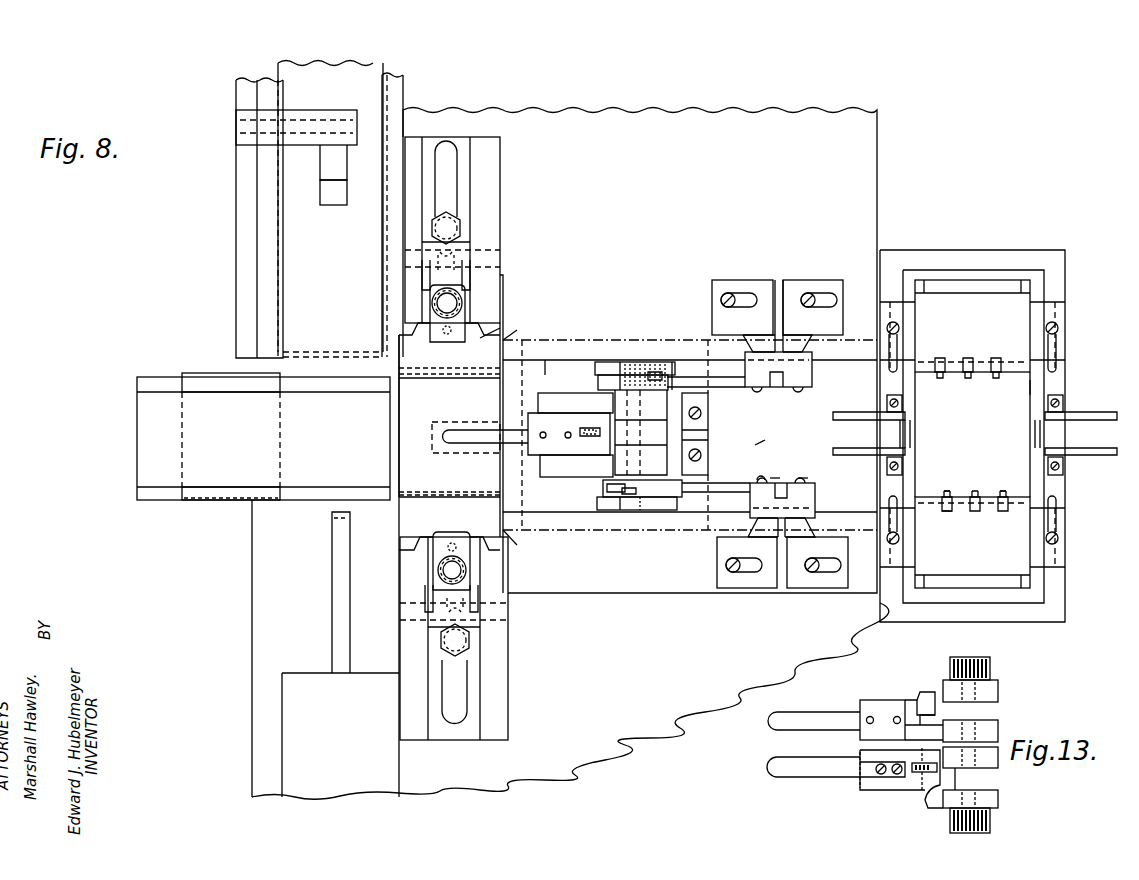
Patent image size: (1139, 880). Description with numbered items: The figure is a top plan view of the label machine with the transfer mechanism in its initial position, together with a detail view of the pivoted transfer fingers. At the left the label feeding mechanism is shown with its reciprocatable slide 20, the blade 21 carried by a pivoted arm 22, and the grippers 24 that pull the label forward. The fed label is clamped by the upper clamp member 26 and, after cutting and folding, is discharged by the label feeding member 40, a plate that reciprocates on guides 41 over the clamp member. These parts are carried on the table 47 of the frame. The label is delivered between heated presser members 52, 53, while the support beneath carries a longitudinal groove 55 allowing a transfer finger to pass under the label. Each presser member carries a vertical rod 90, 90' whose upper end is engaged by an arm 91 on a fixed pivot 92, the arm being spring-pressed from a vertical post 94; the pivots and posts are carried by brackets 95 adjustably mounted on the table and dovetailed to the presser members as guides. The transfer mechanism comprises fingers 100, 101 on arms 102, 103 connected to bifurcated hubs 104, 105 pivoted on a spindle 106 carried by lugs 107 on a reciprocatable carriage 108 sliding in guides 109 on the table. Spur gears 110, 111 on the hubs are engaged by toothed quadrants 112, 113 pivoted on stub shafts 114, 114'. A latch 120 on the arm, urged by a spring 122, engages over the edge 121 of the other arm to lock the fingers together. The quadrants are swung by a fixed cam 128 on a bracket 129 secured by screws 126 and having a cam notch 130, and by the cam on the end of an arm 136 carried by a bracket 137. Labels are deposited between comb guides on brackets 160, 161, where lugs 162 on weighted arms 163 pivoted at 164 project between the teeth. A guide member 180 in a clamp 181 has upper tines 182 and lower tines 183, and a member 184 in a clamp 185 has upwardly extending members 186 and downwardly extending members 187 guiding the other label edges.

In FIG. 8, the reciprocatable slide 20 is at (265, 255).
In FIG. 8, the blade 21 is at (322, 197).
In FIG. 8, the pivoted arm 22 is at (332, 158).
In FIG. 8, the grippers 24 is at (330, 572).
In FIG. 8, the upper clamp member 26 is at (263, 438).
In FIG. 8, the label feeding member 40 is at (210, 497).
In FIG. 8, the guides 41 is at (297, 495).
In FIG. 8, the table 47 is at (862, 163).
In FIG. 8, the presser member 52 is at (520, 329).
In FIG. 8, the presser member 53 is at (520, 544).
In FIG. 8, the longitudinal groove 55 is at (466, 422).
In FIG. 8, the vertical rod 90 is at (449, 543).
In FIG. 8, the vertical rod 90' is at (449, 331).
In FIG. 8, the arm 91 is at (493, 322).
In FIG. 8, the fixed pivot 92 is at (470, 255).
In FIG. 8, the vertical post 94 is at (450, 303).
In FIG. 8, the bracket 95 is at (486, 193).
In FIG. 8, the transfer finger 100 is at (487, 445).
In FIG. 13, the transfer finger 100 is at (805, 713).
In FIG. 13, the transfer finger 101 is at (810, 770).
In FIG. 13, the arm 102 is at (880, 700).
In FIG. 13, the arm 103 is at (878, 787).
In FIG. 8, the hub 104 is at (668, 397).
In FIG. 13, the hub 104 is at (1000, 692).
In FIG. 8, the hub 105 is at (662, 485).
In FIG. 13, the hub 105 is at (1000, 802).
In FIG. 8, the spindle 106 is at (640, 500).
In FIG. 8, the lugs 107 is at (604, 360).
In FIG. 8, the reciprocatable carriage 108 is at (548, 355).
In FIG. 8, the guides 109 is at (853, 360).
In FIG. 8, the spur gear 110 is at (633, 363).
In FIG. 13, the spur gear 110 is at (990, 668).
In FIG. 8, the spur gear 111 is at (645, 505).
In FIG. 13, the spur gear 111 is at (950, 822).
In FIG. 8, the toothed quadrant 112 is at (612, 492).
In FIG. 8, the toothed quadrant 113 is at (598, 383).
In FIG. 8, the stub shaft 114 is at (666, 361).
In FIG. 8, the stub shaft 114' is at (607, 522).
In FIG. 8, the latch 120 is at (606, 415).
In FIG. 13, the latch 120 is at (918, 778).
In FIG. 8, the edge 121 is at (598, 437).
In FIG. 13, the edge 121 is at (928, 700).
In FIG. 8, the spring 122 is at (604, 445).
In FIG. 8, the screws 126 is at (795, 480).
In FIG. 8, the fixed cam 128 is at (760, 445).
In FIG. 8, the bracket 129 is at (803, 480).
In FIG. 8, the cam notch 130 is at (775, 480).
In FIG. 8, the arm 136 is at (713, 388).
In FIG. 8, the bracket 137 is at (797, 375).
In FIG. 8, the bracket 160 is at (972, 436).
In FIG. 8, the bracket 161 is at (972, 539).
In FIG. 8, the lugs 162 is at (948, 490).
In FIG. 8, the arms 163 is at (950, 512).
In FIG. 8, the pivot 164 is at (993, 489).
In FIG. 8, the guide member 180 is at (912, 430).
In FIG. 8, the clamp 181 is at (905, 422).
In FIG. 8, the tines 182 is at (890, 425).
In FIG. 8, the guide tines 183 is at (912, 447).
In FIG. 8, the guide member 184 is at (1035, 430).
In FIG. 8, the clamp 185 is at (1081, 419).
In FIG. 8, the upwardly extending members 186 is at (1030, 405).
In FIG. 8, the downwardly extending members 187 is at (1030, 440).